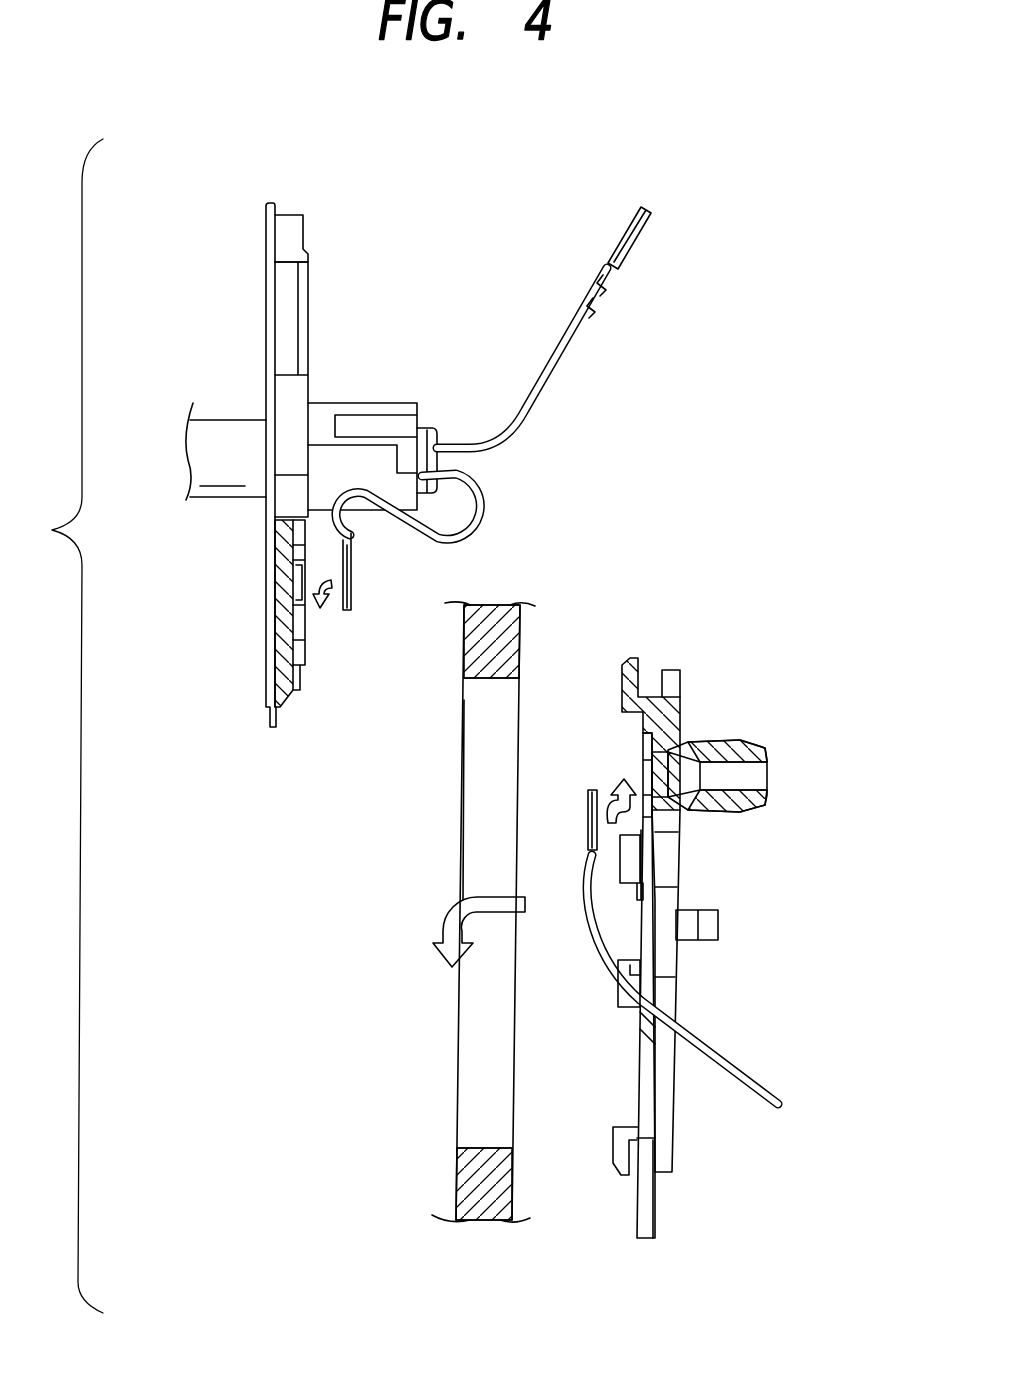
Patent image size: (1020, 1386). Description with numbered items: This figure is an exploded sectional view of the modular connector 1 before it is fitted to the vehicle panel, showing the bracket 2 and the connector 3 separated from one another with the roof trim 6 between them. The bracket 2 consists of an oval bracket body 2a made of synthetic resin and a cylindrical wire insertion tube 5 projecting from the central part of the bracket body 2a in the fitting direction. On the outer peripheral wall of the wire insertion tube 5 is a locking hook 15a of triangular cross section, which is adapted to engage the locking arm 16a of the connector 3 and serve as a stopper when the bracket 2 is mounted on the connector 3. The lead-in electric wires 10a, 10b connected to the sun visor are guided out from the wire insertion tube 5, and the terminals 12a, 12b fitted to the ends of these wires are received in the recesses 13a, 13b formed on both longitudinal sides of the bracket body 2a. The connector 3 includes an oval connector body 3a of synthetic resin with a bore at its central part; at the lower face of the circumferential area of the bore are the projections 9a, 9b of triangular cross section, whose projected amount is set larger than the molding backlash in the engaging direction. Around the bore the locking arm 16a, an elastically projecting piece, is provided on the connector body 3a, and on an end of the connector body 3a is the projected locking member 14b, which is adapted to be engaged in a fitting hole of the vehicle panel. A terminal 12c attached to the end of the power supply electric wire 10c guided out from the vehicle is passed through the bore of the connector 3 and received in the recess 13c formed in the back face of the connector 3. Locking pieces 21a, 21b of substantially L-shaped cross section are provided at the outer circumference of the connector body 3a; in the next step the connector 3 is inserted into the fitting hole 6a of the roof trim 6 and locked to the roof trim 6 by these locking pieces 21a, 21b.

The modular connector 1 is at (707, 450).
The bracket 2 is at (312, 322).
The bracket body 2a is at (262, 357).
The connector 3 is at (676, 1104).
The connector body 3a is at (632, 1205).
The wire insertion tube 5 is at (323, 413).
The roof trim 6 is at (453, 1010).
The fitting hole 6a is at (472, 780).
The projection 9a is at (645, 977).
The projection 9b is at (645, 897).
The lead-in electric wire 10a is at (486, 520).
The lead-in electric wire 10b is at (547, 365).
The power supply electric wire 10c is at (727, 1060).
The terminal 12a is at (353, 580).
The terminal 12b is at (637, 240).
The terminal 12c is at (588, 815).
The recess 13a is at (283, 607).
The recess 13b is at (310, 278).
The recess 13c is at (643, 770).
The projected locking member 14b is at (740, 747).
The locking hook 15a is at (433, 455).
The locking arm 16a is at (715, 927).
The locking piece 21a is at (643, 670).
The locking piece 21b is at (622, 873).